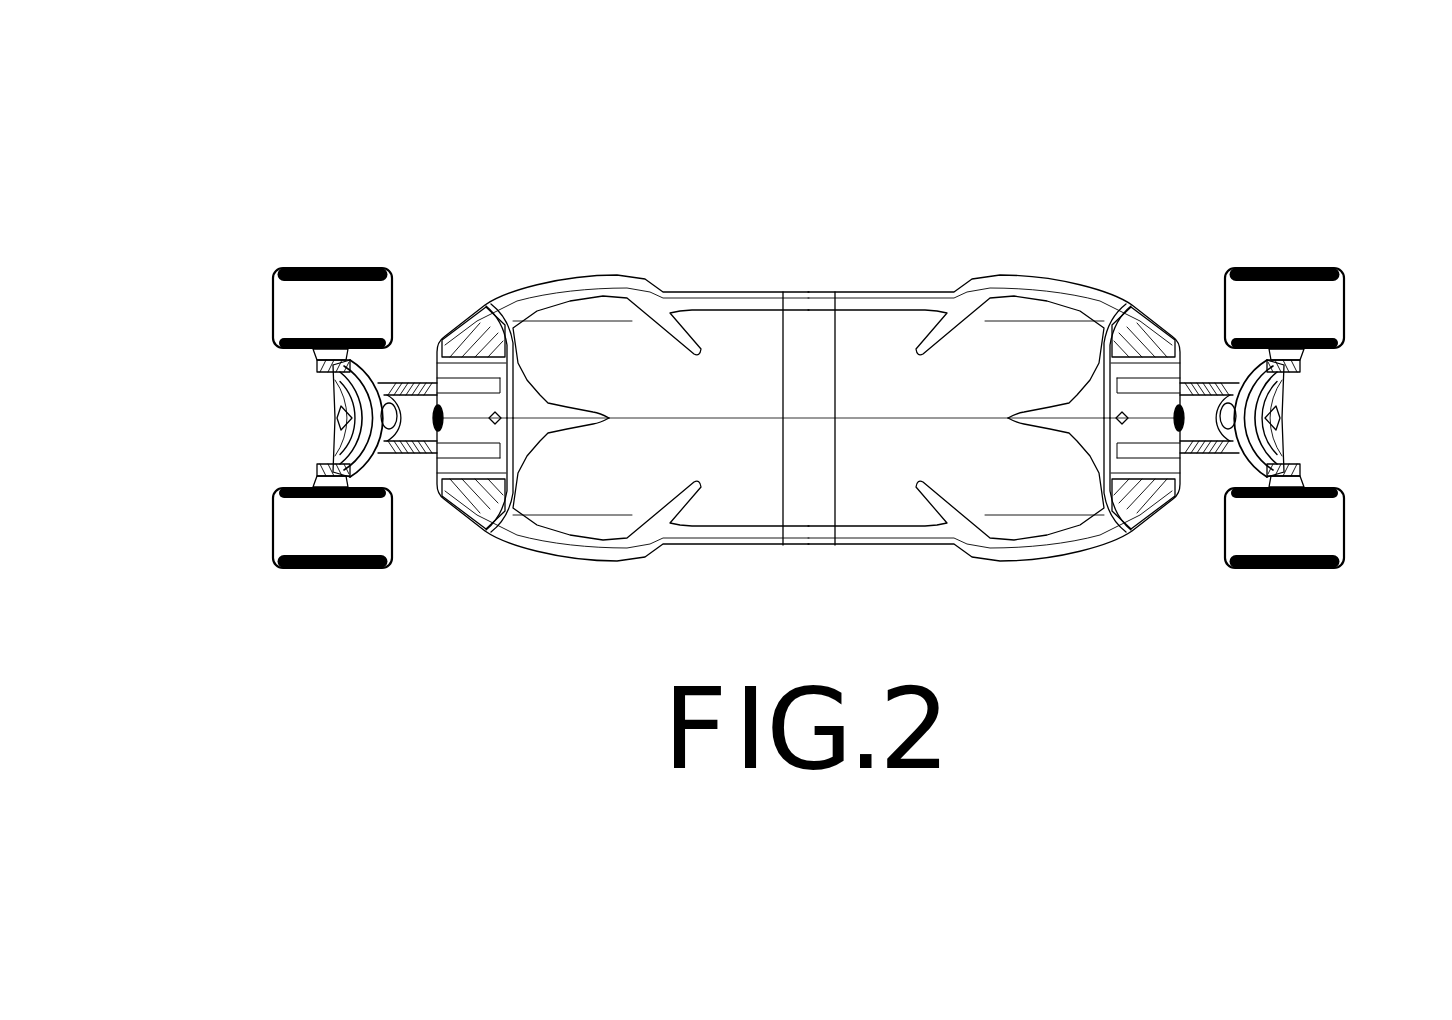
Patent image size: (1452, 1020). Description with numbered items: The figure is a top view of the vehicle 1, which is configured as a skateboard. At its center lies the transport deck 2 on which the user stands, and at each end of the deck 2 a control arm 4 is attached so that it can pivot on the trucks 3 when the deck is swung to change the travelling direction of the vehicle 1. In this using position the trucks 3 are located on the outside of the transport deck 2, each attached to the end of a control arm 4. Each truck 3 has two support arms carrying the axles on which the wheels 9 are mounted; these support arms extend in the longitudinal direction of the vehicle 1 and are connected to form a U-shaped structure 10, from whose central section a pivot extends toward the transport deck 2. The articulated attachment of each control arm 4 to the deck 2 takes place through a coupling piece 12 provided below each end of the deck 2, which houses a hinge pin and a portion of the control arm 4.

The vehicle 1 is at (582, 193).
The transport deck 2 is at (867, 290).
The truck 3 is at (277, 393).
The control arm 4 is at (430, 462).
The wheel 9 is at (305, 305).
The U-shaped structure 10 is at (370, 378).
The coupling piece 12 is at (475, 512).